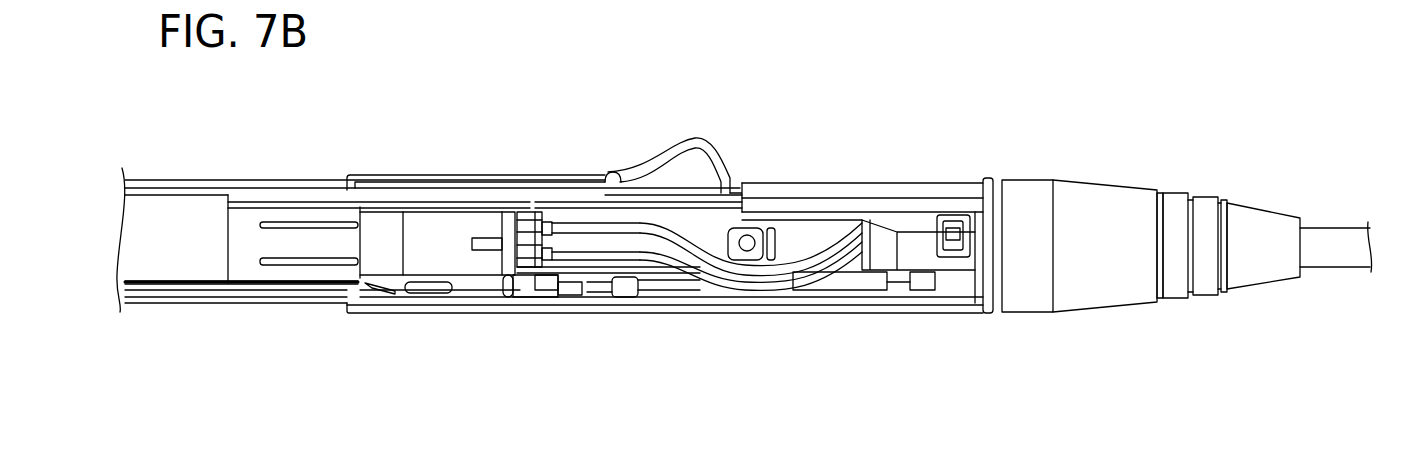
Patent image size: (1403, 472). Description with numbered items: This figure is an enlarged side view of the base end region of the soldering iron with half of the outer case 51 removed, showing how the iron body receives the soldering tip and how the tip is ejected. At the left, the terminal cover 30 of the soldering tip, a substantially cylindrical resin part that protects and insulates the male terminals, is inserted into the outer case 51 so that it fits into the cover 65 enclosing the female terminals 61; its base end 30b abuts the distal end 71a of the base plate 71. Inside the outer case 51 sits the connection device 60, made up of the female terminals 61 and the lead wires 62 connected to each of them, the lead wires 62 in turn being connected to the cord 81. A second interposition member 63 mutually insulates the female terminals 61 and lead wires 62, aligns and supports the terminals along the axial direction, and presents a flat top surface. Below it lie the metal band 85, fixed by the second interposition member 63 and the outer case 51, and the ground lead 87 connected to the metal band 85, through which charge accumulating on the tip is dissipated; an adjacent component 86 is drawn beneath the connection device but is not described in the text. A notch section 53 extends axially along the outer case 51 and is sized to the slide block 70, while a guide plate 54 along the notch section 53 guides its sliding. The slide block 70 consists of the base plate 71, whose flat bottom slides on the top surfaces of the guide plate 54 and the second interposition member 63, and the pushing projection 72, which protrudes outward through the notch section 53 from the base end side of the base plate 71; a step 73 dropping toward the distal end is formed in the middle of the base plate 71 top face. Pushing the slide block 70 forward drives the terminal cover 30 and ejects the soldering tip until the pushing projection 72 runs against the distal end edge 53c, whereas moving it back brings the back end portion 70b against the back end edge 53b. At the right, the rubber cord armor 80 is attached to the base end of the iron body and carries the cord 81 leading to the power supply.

The terminal cover 30 is at (175, 265).
The base end of the terminal cover 30b is at (232, 245).
The outer case 51 is at (170, 178).
The notch section 53 is at (860, 190).
The back end edge of the notch section 53b is at (972, 190).
The distal end edge of the notch section 53c is at (610, 173).
The guide plate 54 is at (792, 213).
The connection device 60 is at (467, 195).
The female terminals 61 is at (530, 228).
The lead wires 62 is at (598, 258).
The second interposition member 63 is at (697, 217).
The cover 65 is at (433, 225).
The slide block 70 is at (650, 115).
The back end portion of the slide block 70b is at (767, 192).
The base plate 71 is at (297, 202).
The distal end of the base plate 71a is at (222, 195).
The pushing projection 72 is at (700, 175).
The step 73 is at (348, 190).
The cord armor 80 is at (1110, 310).
The cord 81 is at (1343, 260).
The metal band 85 is at (397, 313).
The spring seat 86 is at (565, 293).
The ground lead 87 is at (680, 287).